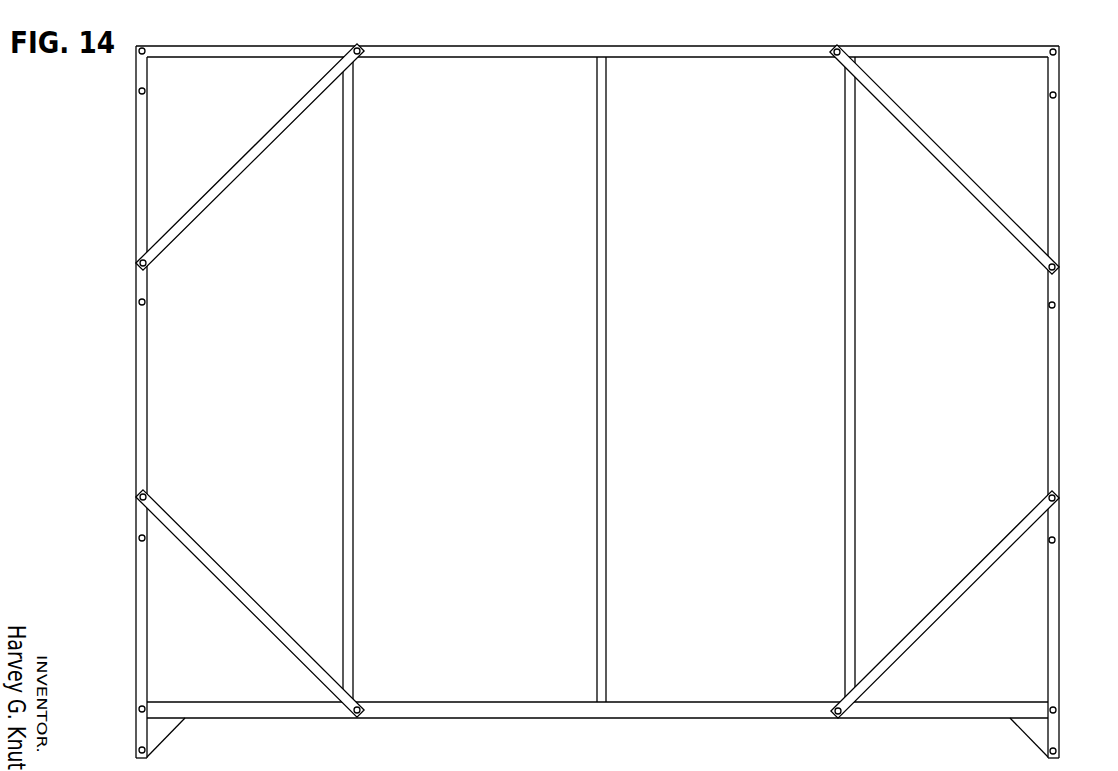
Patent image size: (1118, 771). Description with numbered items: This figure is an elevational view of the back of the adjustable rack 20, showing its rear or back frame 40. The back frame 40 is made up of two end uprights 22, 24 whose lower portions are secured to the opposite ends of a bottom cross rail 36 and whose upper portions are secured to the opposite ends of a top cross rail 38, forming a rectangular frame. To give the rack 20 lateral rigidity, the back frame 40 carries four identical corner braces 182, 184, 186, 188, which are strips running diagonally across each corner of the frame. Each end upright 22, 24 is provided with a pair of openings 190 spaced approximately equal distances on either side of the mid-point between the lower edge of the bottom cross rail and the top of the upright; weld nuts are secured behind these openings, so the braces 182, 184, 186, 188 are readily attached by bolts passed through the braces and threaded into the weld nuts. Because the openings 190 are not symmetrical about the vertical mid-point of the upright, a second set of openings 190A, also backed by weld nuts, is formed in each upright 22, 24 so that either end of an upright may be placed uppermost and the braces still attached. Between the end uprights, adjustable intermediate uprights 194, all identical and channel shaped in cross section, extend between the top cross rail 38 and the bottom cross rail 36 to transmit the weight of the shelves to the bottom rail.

The adjustable rack 20 is at (128, 289).
The end upright 22 is at (1055, 389).
The end upright 24 is at (140, 380).
The bottom cross rail 36 is at (540, 704).
The top cross rail 38 is at (482, 49).
The back frame 40 is at (756, 39).
The corner brace 182 is at (967, 155).
The corner brace 184 is at (246, 155).
The corner brace 186 is at (972, 574).
The corner brace 188 is at (244, 566).
The opening 190 is at (147, 266).
The opening 190A is at (145, 305).
The intermediate upright 194 is at (349, 377).